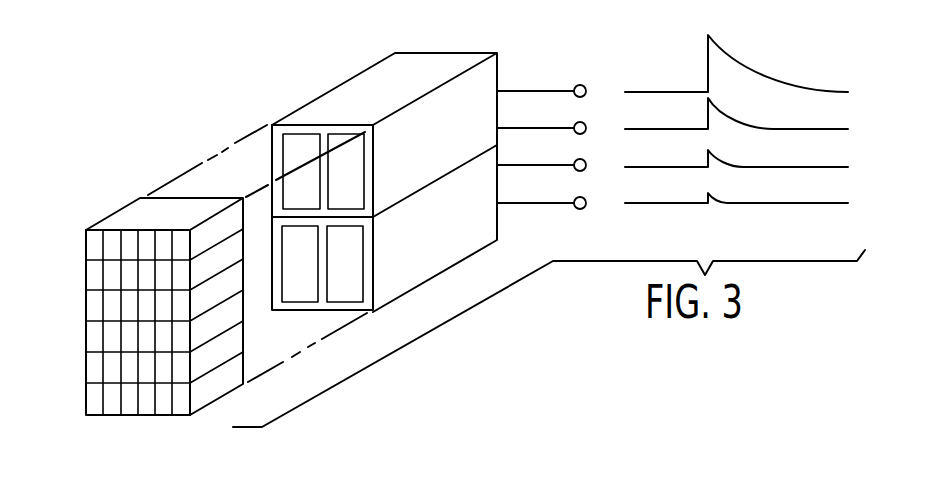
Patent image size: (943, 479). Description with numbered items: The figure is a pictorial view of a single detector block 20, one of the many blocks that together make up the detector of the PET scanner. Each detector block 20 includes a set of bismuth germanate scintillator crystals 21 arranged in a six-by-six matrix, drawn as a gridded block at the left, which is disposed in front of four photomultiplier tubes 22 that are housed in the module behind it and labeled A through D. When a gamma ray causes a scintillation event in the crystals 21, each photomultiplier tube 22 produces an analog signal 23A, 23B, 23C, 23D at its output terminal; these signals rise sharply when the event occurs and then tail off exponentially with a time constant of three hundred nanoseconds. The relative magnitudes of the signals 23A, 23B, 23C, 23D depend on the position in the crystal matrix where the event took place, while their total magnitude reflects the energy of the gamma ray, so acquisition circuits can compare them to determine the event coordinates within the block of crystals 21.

The detector block 20 is at (292, 72).
The scintillator crystals 21 is at (78, 258).
The photomultiplier tubes 22 is at (446, 164).
The analog signal 23A is at (748, 65).
The analog signal 23B is at (727, 110).
The analog signal 23C is at (720, 153).
The analog signal 23D is at (713, 195).